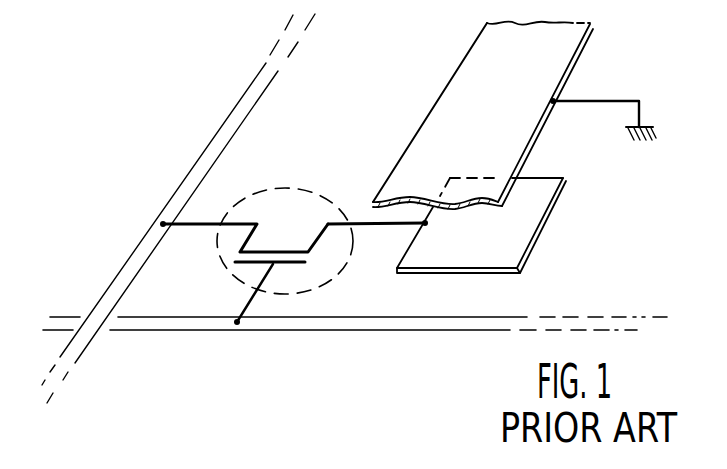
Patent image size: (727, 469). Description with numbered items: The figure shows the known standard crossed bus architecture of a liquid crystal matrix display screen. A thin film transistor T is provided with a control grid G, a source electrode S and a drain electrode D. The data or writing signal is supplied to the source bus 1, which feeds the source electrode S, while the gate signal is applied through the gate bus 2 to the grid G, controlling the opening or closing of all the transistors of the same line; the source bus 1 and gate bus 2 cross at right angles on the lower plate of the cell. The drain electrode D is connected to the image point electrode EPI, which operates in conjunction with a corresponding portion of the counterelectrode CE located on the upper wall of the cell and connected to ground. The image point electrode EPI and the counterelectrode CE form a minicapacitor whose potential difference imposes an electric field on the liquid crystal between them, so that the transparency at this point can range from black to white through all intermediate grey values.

The source bus 1 is at (79, 355).
The gate bus 2 is at (340, 330).
The source electrode S is at (178, 226).
The drain electrode D is at (362, 218).
The control grid G is at (241, 324).
The thin film transistor T is at (279, 188).
The counterelectrode CE is at (467, 64).
The image point electrode EPI is at (525, 242).